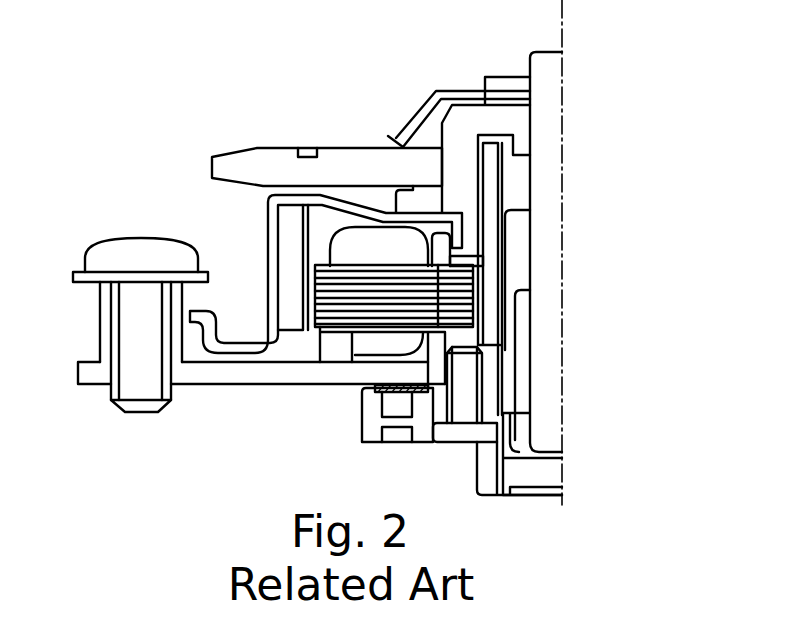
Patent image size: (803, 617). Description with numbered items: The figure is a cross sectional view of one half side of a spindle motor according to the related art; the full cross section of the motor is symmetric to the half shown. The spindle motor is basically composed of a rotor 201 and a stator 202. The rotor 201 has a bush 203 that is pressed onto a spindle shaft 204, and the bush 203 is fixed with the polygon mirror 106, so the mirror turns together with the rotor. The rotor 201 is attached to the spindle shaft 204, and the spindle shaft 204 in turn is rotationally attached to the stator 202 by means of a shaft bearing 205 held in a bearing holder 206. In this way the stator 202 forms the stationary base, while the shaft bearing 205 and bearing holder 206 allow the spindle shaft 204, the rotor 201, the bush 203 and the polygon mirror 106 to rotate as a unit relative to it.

The polygon mirror 106 is at (360, 157).
The rotor 201 is at (253, 259).
The stator 202 is at (63, 395).
The bush 203 is at (470, 112).
The spindle shaft 204 is at (555, 110).
The shaft bearing 205 is at (525, 392).
The bearing holder 206 is at (502, 316).